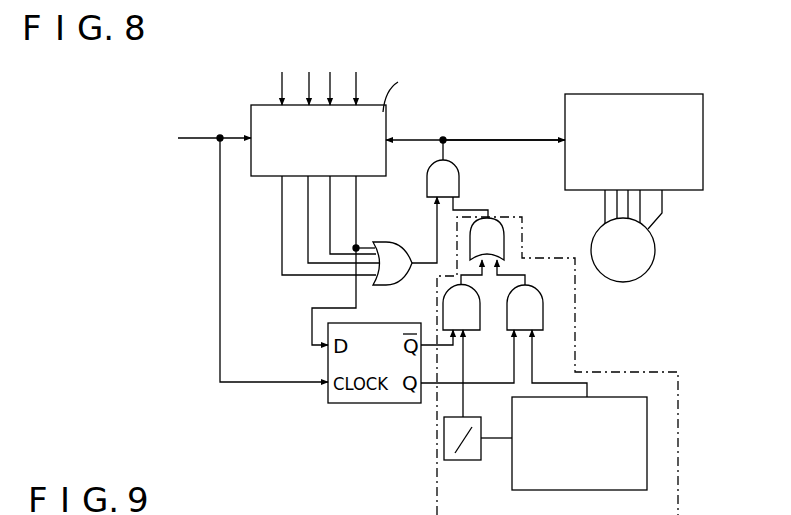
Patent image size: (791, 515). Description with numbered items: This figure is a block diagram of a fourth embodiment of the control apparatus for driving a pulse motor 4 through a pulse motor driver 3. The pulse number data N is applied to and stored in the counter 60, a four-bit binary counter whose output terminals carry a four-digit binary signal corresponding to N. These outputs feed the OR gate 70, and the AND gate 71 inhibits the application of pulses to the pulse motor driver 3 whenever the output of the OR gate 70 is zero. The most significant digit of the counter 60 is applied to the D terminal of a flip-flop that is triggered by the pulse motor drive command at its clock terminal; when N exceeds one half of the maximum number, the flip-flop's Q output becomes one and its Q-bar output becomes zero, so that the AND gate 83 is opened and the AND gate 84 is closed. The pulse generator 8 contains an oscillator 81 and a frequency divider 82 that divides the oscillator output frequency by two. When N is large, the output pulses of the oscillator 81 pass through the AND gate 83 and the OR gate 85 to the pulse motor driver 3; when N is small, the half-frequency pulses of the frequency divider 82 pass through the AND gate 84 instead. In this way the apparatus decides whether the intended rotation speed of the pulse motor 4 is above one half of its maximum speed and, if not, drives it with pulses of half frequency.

The counter 60 is at (250, 113).
The pulse motor driver 3 is at (563, 113).
The pulse motor 4 is at (655, 250).
The OR gate 70 is at (393, 243).
The AND gate 71 is at (459, 177).
The OR gate 85 is at (504, 242).
The AND gate 84 is at (443, 315).
The AND gate 83 is at (543, 310).
The frequency divider 82 is at (445, 452).
The oscillator 81 is at (647, 437).
The pulse generator 8 is at (680, 423).